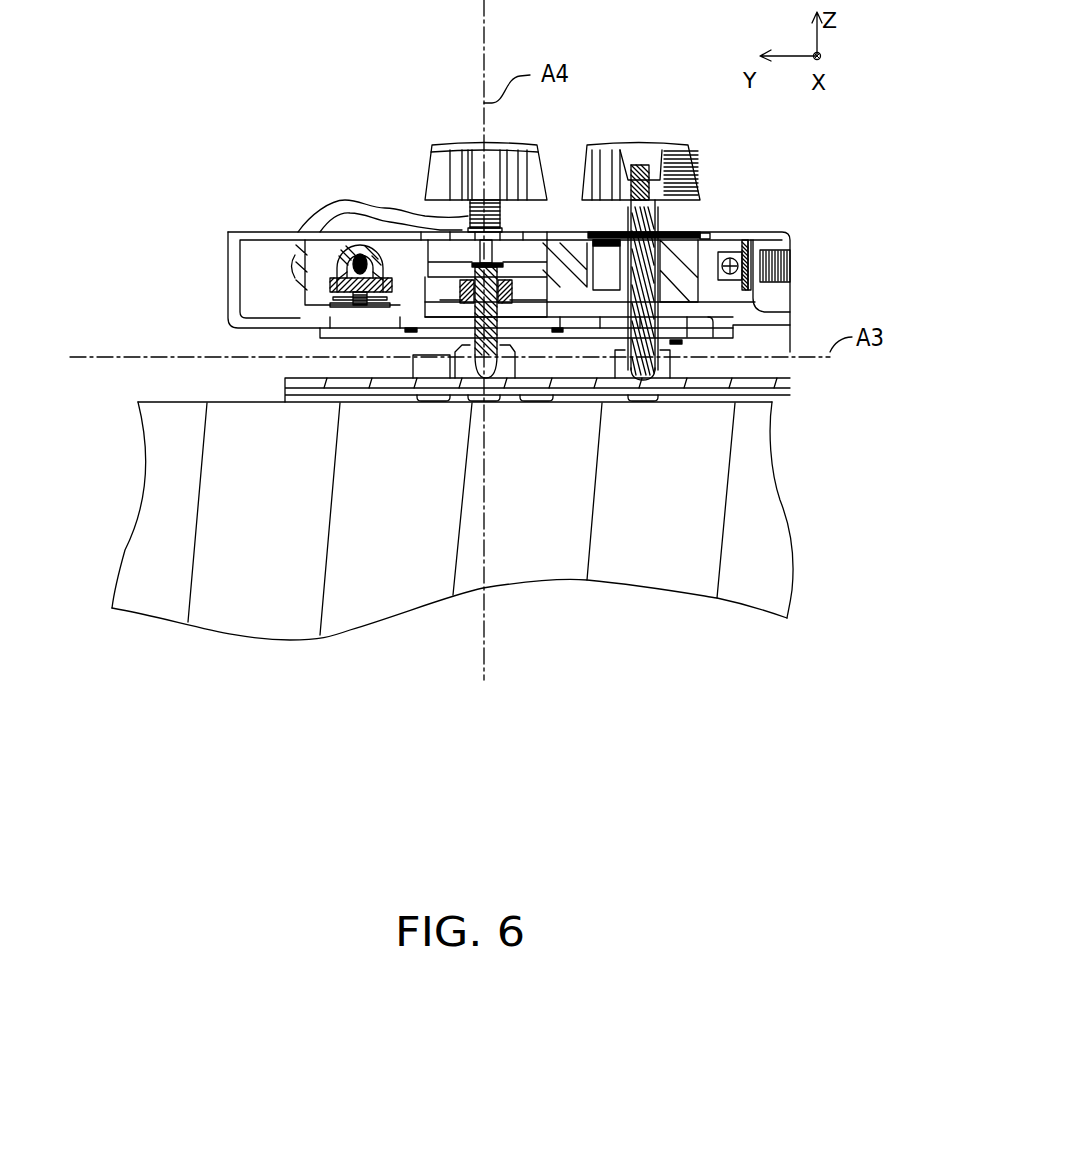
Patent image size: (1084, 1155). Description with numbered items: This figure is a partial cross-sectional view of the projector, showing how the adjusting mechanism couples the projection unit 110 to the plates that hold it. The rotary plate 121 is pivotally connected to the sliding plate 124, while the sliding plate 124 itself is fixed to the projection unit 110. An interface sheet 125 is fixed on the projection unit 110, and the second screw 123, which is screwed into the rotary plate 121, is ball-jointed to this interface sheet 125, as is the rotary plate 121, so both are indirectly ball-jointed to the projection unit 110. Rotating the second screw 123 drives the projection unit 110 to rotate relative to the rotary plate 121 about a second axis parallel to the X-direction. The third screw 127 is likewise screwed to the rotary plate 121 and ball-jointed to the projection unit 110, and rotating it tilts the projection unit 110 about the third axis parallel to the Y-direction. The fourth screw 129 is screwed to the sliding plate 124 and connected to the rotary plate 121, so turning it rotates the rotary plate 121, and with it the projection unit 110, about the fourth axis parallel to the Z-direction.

The projection unit 110 is at (763, 463).
The rotary plate 121 is at (683, 287).
The second screw 123 is at (650, 210).
The sliding plate 124 is at (757, 245).
The interface sheet 125 is at (770, 381).
The third screw 127 is at (472, 217).
The fourth screw 129 is at (358, 247).